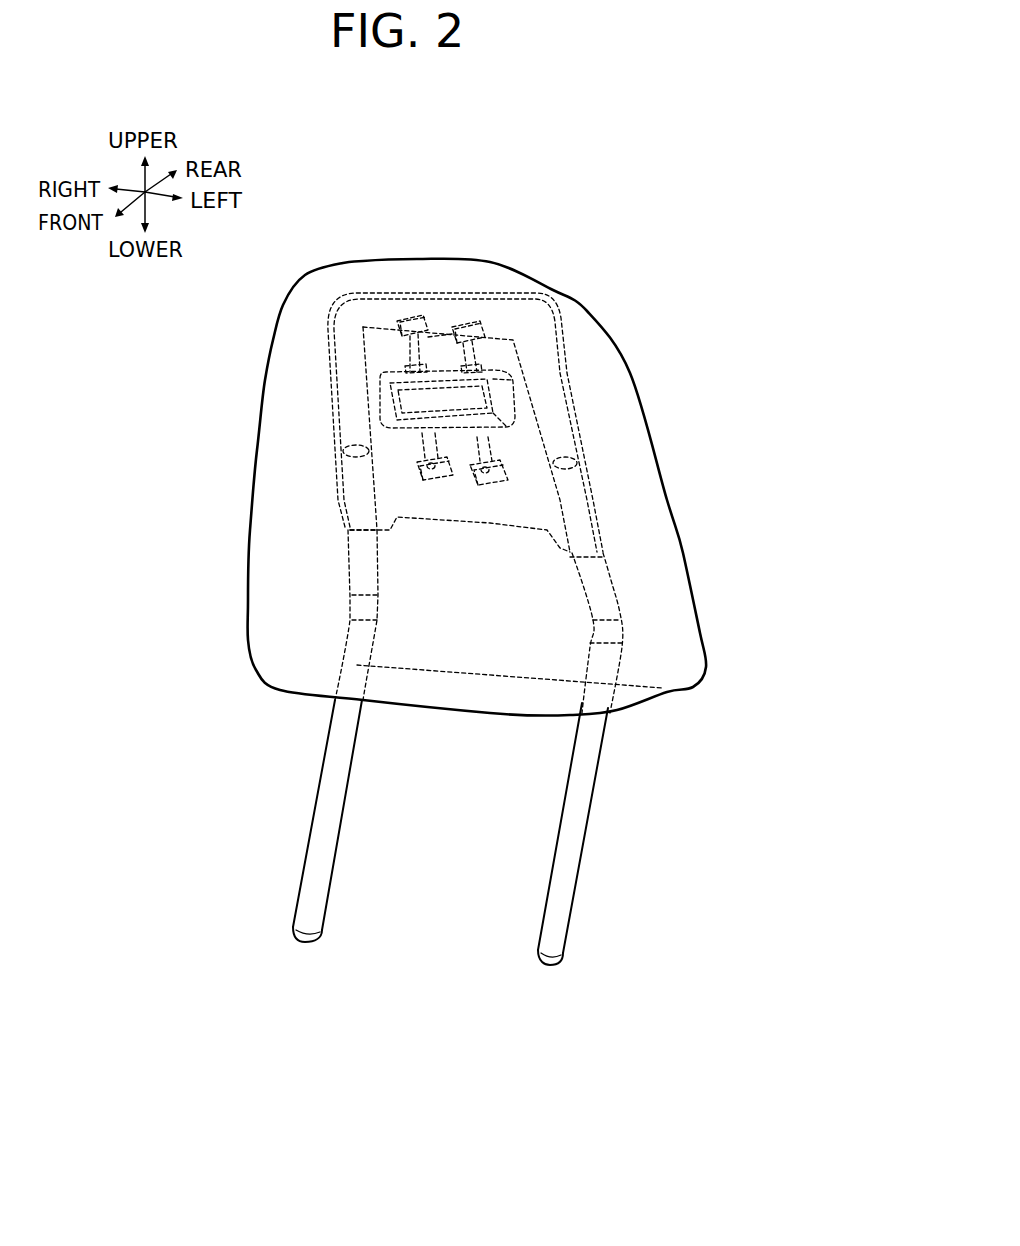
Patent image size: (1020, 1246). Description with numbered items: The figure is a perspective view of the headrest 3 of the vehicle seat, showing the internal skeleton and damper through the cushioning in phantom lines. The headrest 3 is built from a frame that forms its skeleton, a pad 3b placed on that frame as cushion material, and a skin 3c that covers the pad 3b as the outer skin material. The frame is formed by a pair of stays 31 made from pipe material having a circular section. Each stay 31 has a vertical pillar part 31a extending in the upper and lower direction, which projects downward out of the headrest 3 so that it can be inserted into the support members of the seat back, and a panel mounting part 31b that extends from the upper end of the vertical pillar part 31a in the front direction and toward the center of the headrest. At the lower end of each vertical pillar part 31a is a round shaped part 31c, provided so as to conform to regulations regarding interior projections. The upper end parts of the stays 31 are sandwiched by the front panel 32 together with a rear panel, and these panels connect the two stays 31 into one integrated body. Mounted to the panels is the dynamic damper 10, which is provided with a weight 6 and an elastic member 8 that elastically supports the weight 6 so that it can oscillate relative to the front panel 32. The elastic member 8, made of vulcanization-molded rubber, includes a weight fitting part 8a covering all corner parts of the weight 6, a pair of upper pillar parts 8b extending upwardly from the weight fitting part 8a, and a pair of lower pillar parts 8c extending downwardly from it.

The headrest 3 is at (433, 487).
The pad 3b is at (265, 543).
The skin 3c is at (247, 578).
The weight 6 is at (477, 403).
The elastic member 8 is at (363, 354).
The weight fitting part 8a is at (378, 326).
The upper pillar parts 8b is at (403, 357).
The lower pillar parts 8c is at (427, 440).
The dynamic damper 10 is at (439, 345).
The stays 31 is at (468, 796).
The vertical pillar part 31a is at (348, 797).
The panel mounting part 31b is at (350, 570).
The round shaped part 31c is at (305, 940).
The front panel 32 is at (553, 412).